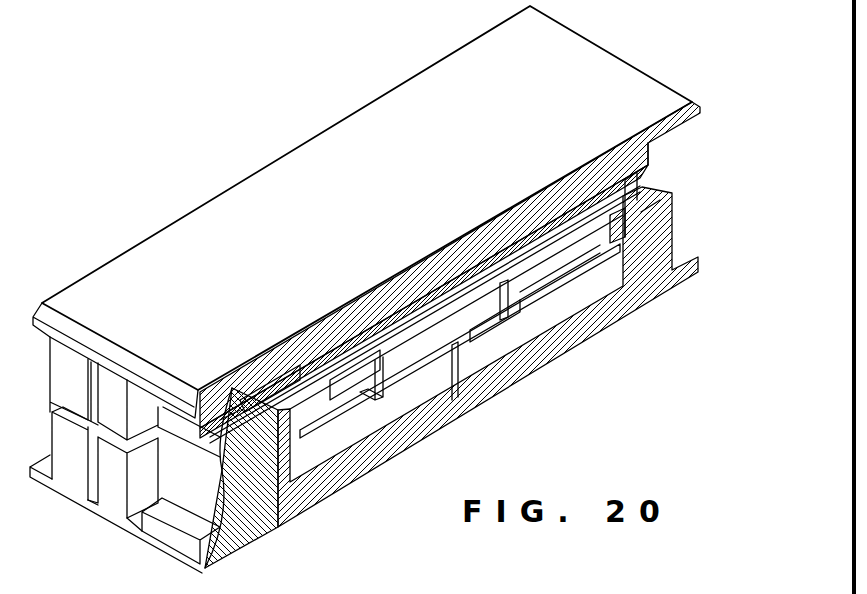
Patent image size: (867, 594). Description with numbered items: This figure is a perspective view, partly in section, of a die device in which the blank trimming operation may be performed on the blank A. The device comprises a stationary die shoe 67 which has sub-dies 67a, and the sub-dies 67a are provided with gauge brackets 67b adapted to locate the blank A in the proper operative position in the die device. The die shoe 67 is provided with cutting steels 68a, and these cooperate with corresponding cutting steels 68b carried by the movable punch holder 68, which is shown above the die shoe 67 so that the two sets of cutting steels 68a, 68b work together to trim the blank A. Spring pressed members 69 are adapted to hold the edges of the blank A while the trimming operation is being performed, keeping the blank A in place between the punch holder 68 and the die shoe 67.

The movable punch holder 68 is at (605, 43).
The cutting steels 68a is at (641, 212).
The cutting steels 68b is at (640, 178).
The spring pressed members 69 is at (625, 193).
The stationary die shoe 67 is at (480, 407).
The sub-dies 67a is at (408, 387).
The gauge brackets 67b is at (545, 300).
The blank A is at (520, 310).